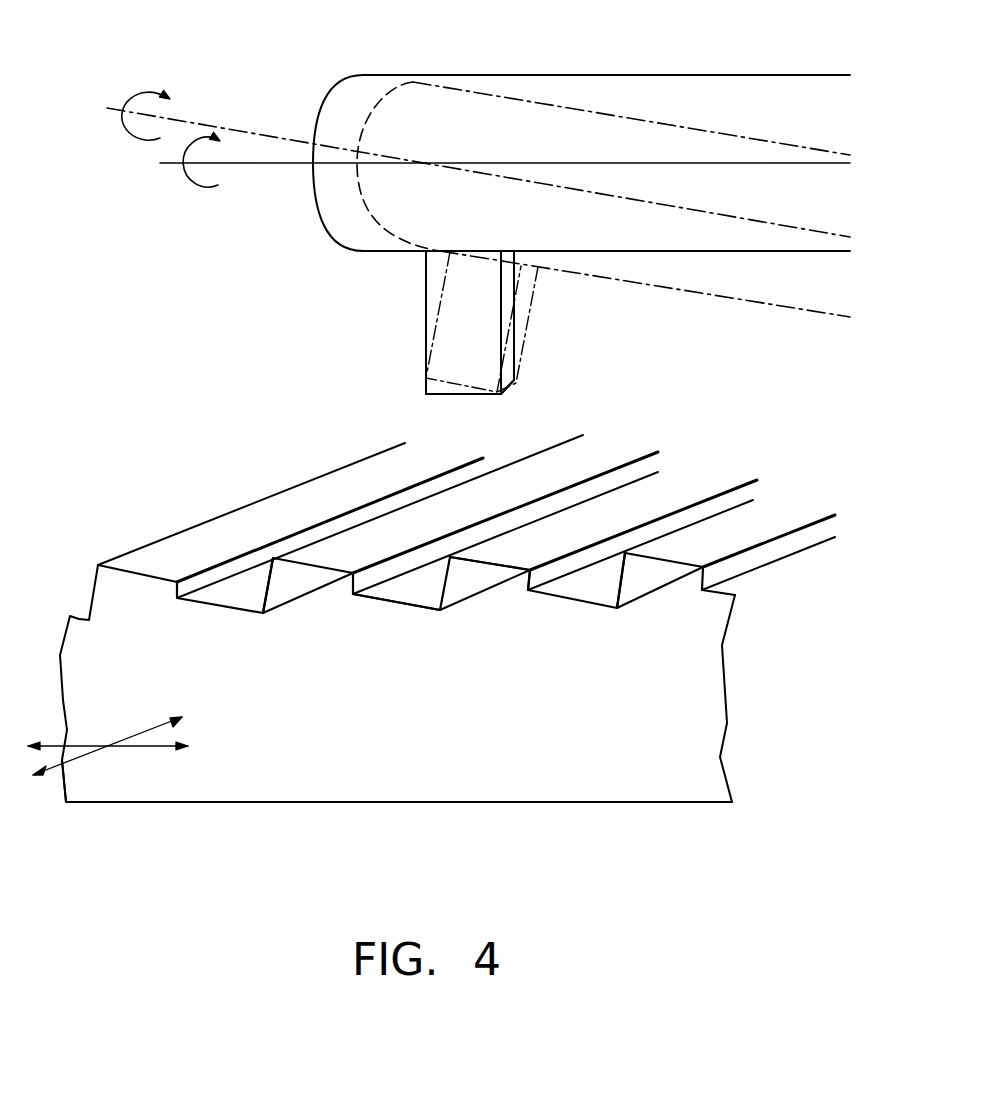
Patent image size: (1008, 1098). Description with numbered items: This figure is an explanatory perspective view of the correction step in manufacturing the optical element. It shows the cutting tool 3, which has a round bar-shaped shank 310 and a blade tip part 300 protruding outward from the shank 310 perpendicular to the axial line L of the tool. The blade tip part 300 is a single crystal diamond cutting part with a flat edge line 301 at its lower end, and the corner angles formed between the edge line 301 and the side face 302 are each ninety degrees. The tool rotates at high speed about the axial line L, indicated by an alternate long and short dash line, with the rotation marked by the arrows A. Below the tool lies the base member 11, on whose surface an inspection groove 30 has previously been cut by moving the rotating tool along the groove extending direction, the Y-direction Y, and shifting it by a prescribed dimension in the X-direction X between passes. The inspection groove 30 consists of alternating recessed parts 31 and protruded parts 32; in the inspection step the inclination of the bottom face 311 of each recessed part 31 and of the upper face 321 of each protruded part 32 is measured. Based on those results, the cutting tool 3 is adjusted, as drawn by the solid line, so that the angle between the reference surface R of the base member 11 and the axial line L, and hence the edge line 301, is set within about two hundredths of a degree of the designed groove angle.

The cutting tool 3 is at (478, 219).
The shank 310 is at (632, 75).
The blade tip part 300 is at (447, 280).
The edge line 301 is at (467, 394).
The side face 302 is at (527, 285).
The inspection groove 30 is at (463, 683).
The recessed part 31 is at (387, 603).
The protruded part 32 is at (477, 563).
The bottom face 311 is at (250, 588).
The upper face 321 is at (577, 453).
The base member 11 is at (752, 593).
The reference surface R is at (380, 800).
The axial line L is at (244, 163).
The rotation direction A is at (167, 138).
The X-direction X is at (105, 729).
The Y-direction Y is at (107, 729).